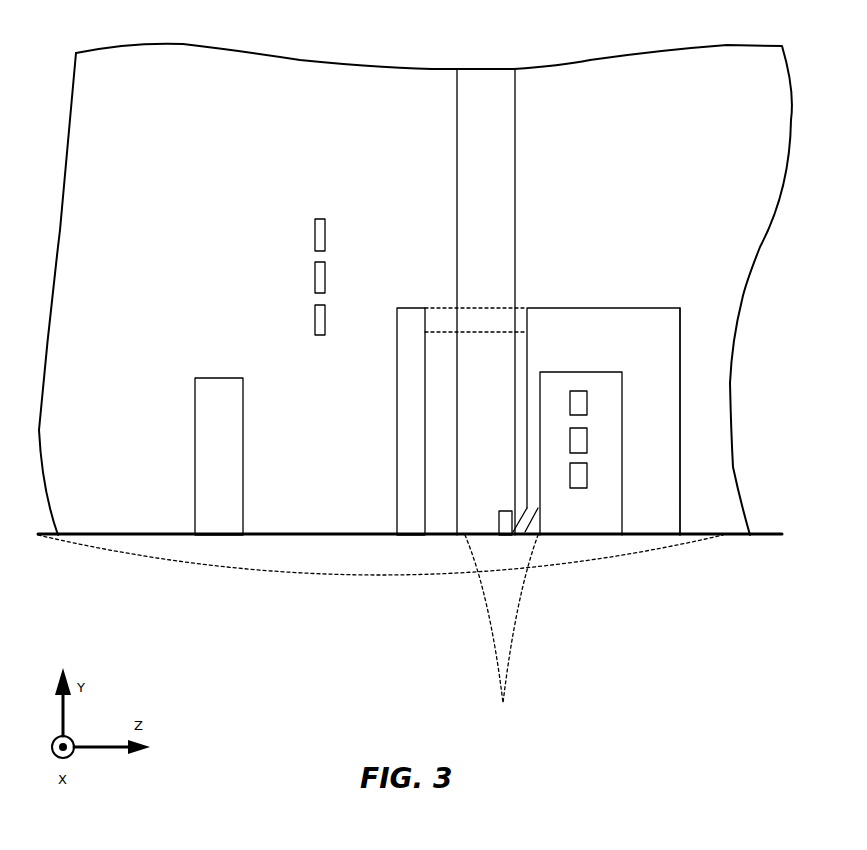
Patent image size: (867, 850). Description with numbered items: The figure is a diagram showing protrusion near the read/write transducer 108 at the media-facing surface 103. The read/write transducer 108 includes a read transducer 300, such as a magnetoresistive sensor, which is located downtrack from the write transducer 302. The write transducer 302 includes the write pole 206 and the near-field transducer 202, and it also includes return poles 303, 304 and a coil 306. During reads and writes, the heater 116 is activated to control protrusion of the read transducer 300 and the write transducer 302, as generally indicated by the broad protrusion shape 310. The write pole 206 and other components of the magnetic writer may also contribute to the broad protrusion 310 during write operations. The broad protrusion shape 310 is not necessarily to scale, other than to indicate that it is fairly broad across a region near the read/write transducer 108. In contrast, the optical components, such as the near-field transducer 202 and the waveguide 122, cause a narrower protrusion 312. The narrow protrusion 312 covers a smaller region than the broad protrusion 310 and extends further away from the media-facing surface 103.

The media-facing surface 103 is at (742, 537).
The read/write transducer 108 is at (414, 624).
The heater 116 is at (315, 220).
The waveguide 122 is at (485, 73).
The near-field transducer 202 is at (505, 508).
The write pole 206 is at (537, 508).
The read transducer 300 is at (198, 437).
The write transducer 302 is at (622, 392).
The return pole 303 is at (403, 485).
The return pole 304 is at (665, 507).
The coil 306 is at (583, 445).
The broad protrusion shape 310 is at (247, 573).
The narrow protrusion 312 is at (512, 667).